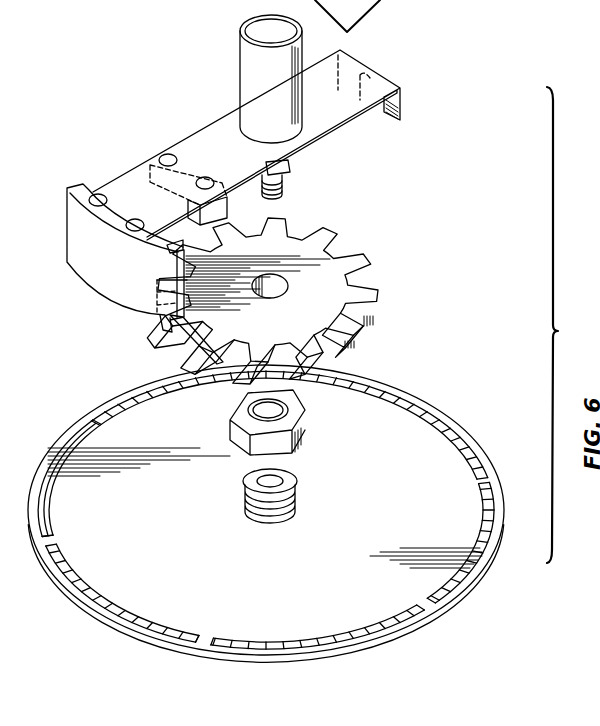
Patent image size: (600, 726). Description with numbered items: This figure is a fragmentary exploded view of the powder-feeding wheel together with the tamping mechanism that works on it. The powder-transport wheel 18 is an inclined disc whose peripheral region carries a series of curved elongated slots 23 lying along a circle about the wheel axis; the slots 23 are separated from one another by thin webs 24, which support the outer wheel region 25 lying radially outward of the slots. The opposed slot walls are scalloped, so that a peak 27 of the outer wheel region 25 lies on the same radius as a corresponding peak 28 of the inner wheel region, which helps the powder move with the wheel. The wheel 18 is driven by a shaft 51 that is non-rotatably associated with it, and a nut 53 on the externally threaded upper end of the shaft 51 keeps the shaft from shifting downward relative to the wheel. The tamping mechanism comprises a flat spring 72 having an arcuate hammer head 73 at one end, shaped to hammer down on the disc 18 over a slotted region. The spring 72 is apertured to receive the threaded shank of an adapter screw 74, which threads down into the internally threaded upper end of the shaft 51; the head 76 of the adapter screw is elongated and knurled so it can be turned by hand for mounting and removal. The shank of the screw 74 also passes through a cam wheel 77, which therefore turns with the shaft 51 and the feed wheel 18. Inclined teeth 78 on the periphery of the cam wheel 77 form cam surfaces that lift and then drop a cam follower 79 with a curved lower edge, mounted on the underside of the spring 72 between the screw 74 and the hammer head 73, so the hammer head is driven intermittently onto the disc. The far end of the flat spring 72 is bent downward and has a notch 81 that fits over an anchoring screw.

The powder-transport wheel 18 is at (427, 430).
The elongated slots 23 is at (497, 498).
The thin webs 24 is at (492, 478).
The outer wheel region 25 is at (503, 528).
The peak of outer wheel region 27 is at (88, 424).
The peak of inner wheel region 28 is at (93, 426).
The shaft 51 is at (297, 494).
The nut 53 is at (307, 432).
The flat spring 72 is at (342, 115).
The arcuate hammer head 73 is at (102, 278).
The adapter screw 74 is at (290, 169).
The head of adapter screw 76 is at (240, 70).
The cam wheel 77 is at (345, 280).
The inclined teeth 78 is at (190, 347).
The cam follower 79 is at (228, 207).
The notch 81 is at (368, 83).